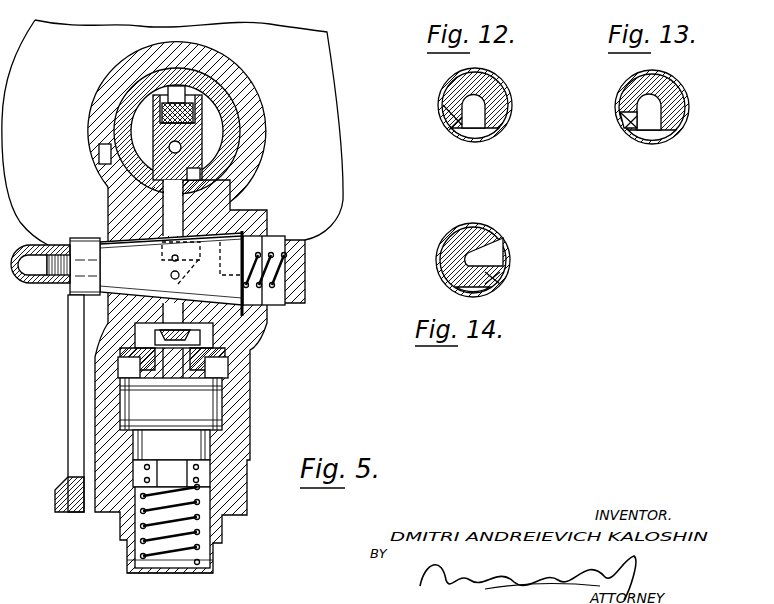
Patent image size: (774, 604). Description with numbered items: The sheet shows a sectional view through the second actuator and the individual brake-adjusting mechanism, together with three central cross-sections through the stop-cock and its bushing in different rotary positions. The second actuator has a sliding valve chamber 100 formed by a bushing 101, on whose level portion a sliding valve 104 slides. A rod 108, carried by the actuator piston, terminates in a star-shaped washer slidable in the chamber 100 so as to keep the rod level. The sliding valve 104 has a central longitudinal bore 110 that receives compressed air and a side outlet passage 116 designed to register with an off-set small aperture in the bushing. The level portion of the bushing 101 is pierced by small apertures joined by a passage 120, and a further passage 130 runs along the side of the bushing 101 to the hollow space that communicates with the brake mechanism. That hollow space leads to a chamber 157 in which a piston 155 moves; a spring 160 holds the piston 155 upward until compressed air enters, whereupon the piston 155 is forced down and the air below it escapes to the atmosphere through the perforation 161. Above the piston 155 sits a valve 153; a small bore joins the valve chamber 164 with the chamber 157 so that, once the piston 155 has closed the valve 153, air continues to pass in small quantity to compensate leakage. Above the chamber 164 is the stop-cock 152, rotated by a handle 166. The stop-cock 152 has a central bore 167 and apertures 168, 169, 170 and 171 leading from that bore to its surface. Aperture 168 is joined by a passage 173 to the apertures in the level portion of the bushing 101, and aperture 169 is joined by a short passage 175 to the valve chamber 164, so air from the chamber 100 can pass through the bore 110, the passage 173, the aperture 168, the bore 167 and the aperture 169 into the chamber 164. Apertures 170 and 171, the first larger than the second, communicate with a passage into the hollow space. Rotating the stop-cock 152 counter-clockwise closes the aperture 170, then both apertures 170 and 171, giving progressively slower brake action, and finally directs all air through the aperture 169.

In FIG. 5, the sliding valve chamber 100 is at (137, 120).
In FIG. 5, the bushing 101 is at (213, 87).
In FIG. 5, the sliding valve 104 is at (198, 106).
In FIG. 5, the rod 108 is at (158, 110).
In FIG. 5, the central longitudinal bore 110 is at (181, 147).
In FIG. 5, the side outlet passage 116 is at (198, 175).
In FIG. 5, the passage 120 is at (160, 184).
In FIG. 5, the passage 130 is at (106, 152).
In FIG. 5, the stop-cock 152 is at (97, 300).
In FIG. 12, the stop-cock 152 is at (500, 84).
In FIG. 13, the stop-cock 152 is at (678, 92).
In FIG. 14, the stop-cock 152 is at (470, 230).
In FIG. 5, the valve 153 is at (135, 332).
In FIG. 5, the piston 155 is at (130, 394).
In FIG. 5, the chamber 157 is at (122, 369).
In FIG. 5, the spring 160 is at (198, 533).
In FIG. 5, the perforation 161 is at (172, 569).
In FIG. 5, the valve chamber 164 is at (197, 337).
In FIG. 5, the handle 166 is at (75, 414).
In FIG. 5, the central bore 167 is at (172, 258).
In FIG. 5, the aperture 168 is at (245, 212).
In FIG. 5, the aperture 169 is at (180, 286).
In FIG. 12, the aperture 169 is at (497, 130).
In FIG. 13, the aperture 169 is at (672, 130).
In FIG. 14, the aperture 169 is at (500, 246).
In FIG. 5, the aperture 170 is at (171, 275).
In FIG. 12, the aperture 170 is at (450, 126).
In FIG. 13, the aperture 170 is at (632, 130).
In FIG. 14, the aperture 170 is at (502, 281).
In FIG. 5, the aperture 171 is at (133, 234).
In FIG. 12, the aperture 171 is at (441, 106).
In FIG. 13, the aperture 171 is at (622, 112).
In FIG. 14, the aperture 171 is at (495, 290).
In FIG. 5, the passage 173 is at (183, 228).
In FIG. 5, the short passage 175 is at (182, 313).
In FIG. 12, the short passage 175 is at (478, 136).
In FIG. 13, the short passage 175 is at (652, 140).
In FIG. 14, the short passage 175 is at (468, 293).